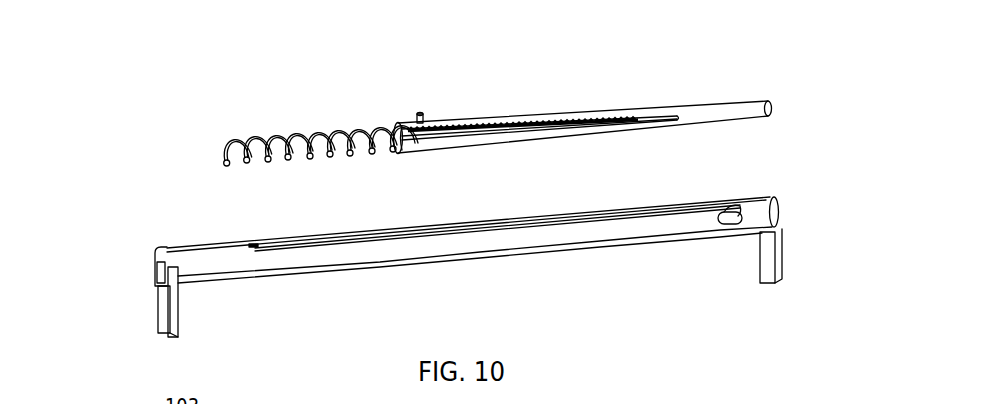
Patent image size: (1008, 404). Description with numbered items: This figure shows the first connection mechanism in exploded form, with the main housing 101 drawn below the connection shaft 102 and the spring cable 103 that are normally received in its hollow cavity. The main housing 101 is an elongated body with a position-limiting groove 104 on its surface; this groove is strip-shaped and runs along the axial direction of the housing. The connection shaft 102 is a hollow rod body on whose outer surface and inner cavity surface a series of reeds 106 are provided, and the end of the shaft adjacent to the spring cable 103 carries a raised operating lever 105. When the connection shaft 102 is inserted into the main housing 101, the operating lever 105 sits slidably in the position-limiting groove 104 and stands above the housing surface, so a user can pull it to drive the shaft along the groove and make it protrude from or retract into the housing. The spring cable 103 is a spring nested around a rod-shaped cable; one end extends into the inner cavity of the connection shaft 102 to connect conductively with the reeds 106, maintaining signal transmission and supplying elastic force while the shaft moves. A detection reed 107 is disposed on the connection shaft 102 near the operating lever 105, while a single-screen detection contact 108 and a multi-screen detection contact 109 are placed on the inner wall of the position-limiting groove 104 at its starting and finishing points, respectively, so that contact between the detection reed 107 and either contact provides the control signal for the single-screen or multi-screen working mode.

The main housing 101 is at (424, 244).
The connection shaft 102 is at (605, 80).
The spring cable 103 is at (311, 104).
The position-limiting groove 104 is at (497, 253).
The operating lever 105 is at (480, 72).
The reeds 106 is at (542, 80).
The detection reed 107 is at (350, 84).
The single-screen detection contact 108 is at (313, 283).
The multi-screen detection contact 109 is at (787, 251).